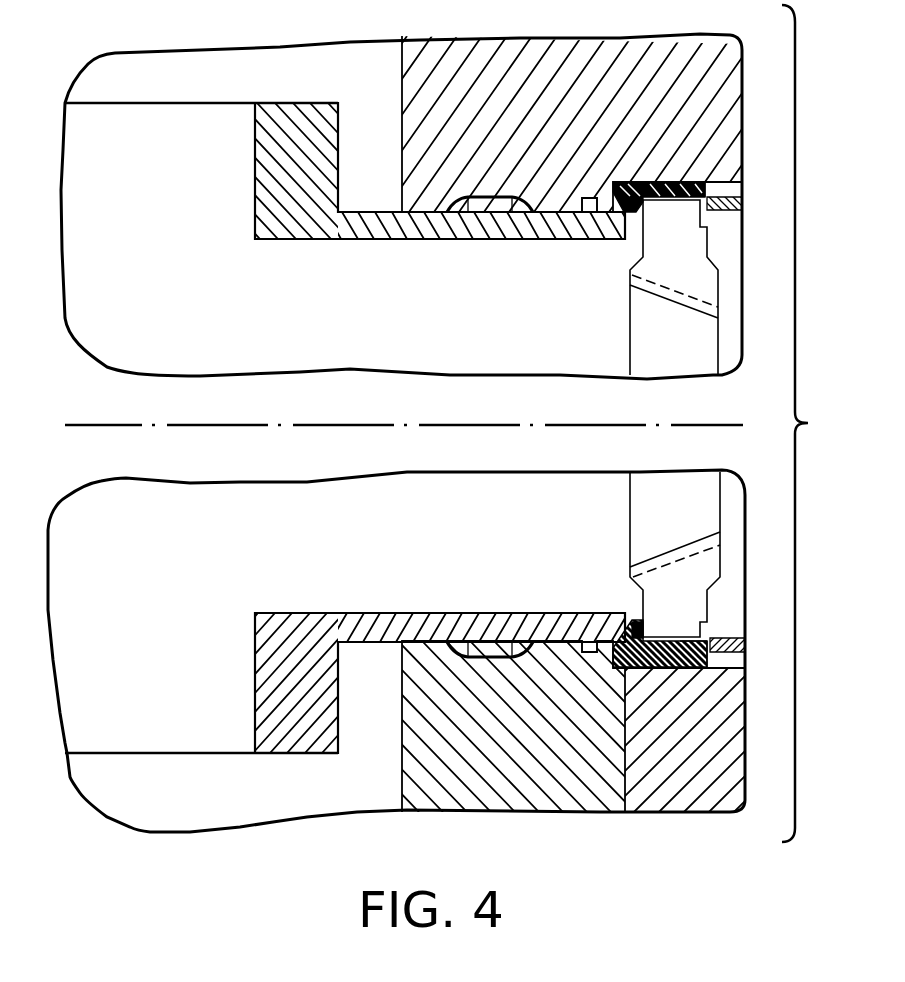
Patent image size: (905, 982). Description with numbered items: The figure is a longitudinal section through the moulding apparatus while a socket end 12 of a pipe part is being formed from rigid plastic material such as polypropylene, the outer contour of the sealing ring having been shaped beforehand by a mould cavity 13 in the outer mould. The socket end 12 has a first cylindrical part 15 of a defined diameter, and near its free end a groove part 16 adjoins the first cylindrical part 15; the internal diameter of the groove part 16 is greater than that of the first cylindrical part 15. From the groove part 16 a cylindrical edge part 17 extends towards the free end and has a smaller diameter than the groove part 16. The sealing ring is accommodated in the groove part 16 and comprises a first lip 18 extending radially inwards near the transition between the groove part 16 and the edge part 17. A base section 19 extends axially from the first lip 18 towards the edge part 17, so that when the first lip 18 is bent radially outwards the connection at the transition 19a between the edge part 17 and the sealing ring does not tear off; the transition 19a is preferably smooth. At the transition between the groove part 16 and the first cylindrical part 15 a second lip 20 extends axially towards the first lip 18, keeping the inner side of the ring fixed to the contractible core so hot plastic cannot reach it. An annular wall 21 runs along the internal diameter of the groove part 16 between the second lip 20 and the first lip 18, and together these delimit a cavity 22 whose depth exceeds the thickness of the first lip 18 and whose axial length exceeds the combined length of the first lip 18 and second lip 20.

The socket end 12 is at (738, 202).
The mould cavity 13 is at (487, 208).
The first cylindrical part 15 is at (735, 214).
The groove part 16 is at (694, 181).
The cylindrical edge part 17 is at (590, 197).
The first lip 18 is at (647, 630).
The base section 19 is at (625, 617).
The transition 19a is at (628, 240).
The second lip 20 is at (682, 639).
The annular wall 21 is at (663, 182).
The cavity 22 is at (649, 207).